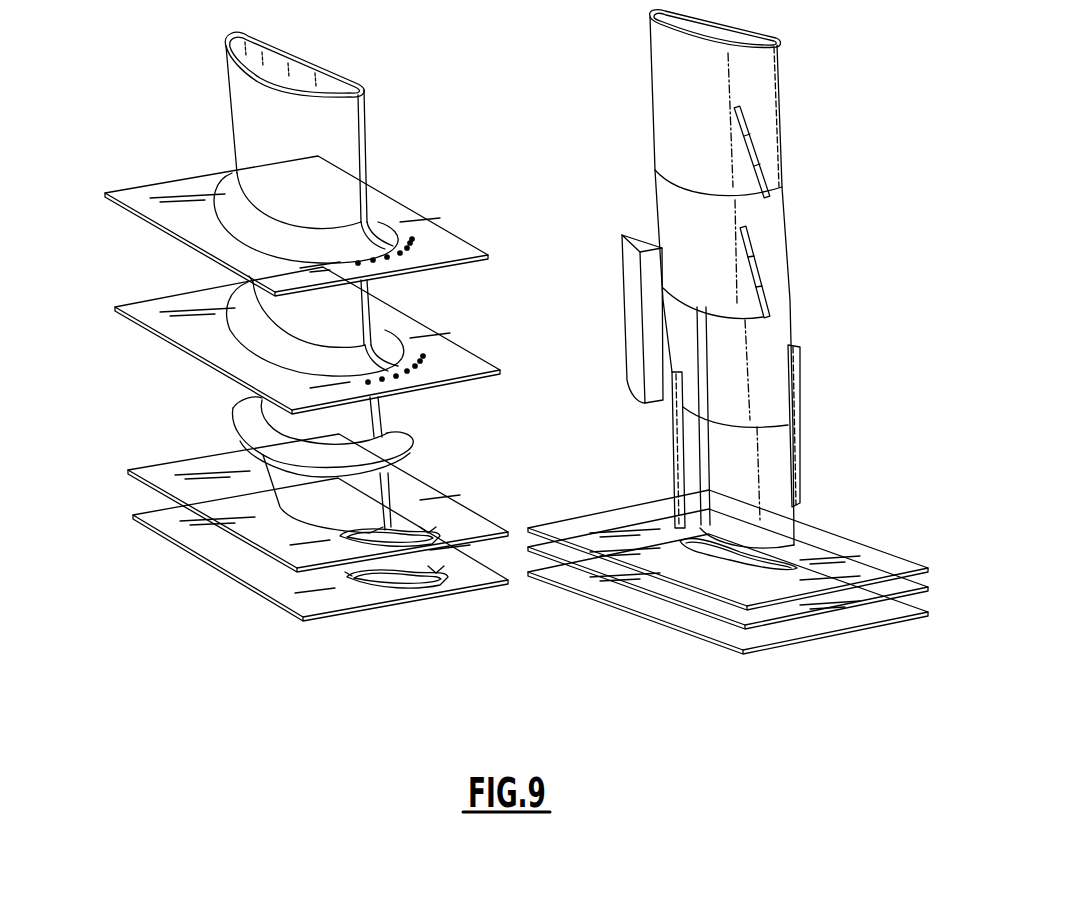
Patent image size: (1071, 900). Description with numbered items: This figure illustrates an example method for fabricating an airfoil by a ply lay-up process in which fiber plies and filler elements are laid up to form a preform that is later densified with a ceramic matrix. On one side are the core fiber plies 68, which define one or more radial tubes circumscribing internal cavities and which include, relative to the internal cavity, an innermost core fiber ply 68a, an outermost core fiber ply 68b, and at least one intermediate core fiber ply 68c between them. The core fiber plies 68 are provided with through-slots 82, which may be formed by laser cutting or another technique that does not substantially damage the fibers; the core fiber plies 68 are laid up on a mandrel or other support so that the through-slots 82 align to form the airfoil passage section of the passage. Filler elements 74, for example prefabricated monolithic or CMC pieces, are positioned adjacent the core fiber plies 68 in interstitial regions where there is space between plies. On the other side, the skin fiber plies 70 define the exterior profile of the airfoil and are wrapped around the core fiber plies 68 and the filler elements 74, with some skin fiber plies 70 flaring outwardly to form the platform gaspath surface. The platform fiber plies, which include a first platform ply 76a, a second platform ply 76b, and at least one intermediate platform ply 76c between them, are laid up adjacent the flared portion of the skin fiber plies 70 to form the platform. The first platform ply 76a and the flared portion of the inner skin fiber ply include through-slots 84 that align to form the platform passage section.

The core fiber plies 68 is at (863, 28).
The innermost core fiber ply 68a is at (768, 457).
The outermost core fiber ply 68b is at (767, 103).
The intermediate core fiber ply 68c is at (768, 333).
The skin fiber plies 70 is at (90, 496).
The filler elements 74 is at (400, 458).
The first platform ply 76a is at (305, 617).
The second platform ply 76b is at (742, 648).
The intermediate platform ply 76c is at (885, 588).
The through-slots 82 is at (747, 240).
The through-slots 84 is at (440, 566).